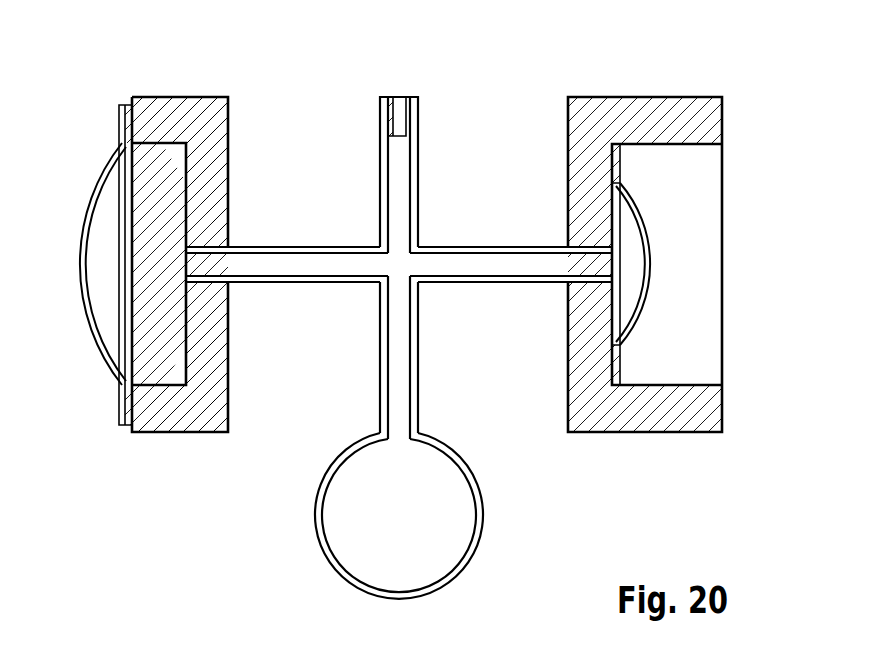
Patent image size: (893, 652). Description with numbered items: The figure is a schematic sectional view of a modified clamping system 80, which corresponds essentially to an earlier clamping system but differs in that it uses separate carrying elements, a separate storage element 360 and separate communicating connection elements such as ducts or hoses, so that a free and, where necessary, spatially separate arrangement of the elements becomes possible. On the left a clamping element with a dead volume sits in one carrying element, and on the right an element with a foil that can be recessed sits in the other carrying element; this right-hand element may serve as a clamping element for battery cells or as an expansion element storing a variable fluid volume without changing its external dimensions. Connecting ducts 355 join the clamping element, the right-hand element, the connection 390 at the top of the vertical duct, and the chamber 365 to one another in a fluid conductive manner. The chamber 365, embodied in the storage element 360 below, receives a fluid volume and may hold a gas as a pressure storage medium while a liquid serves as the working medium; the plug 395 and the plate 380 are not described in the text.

The modified clamping system 80 is at (534, 72).
The connecting duct 355 is at (405, 262).
The storage element 360 is at (484, 500).
The chamber 365 is at (421, 531).
The support plate 380 is at (128, 104).
The connection 390 is at (382, 96).
The plug 395 is at (403, 96).